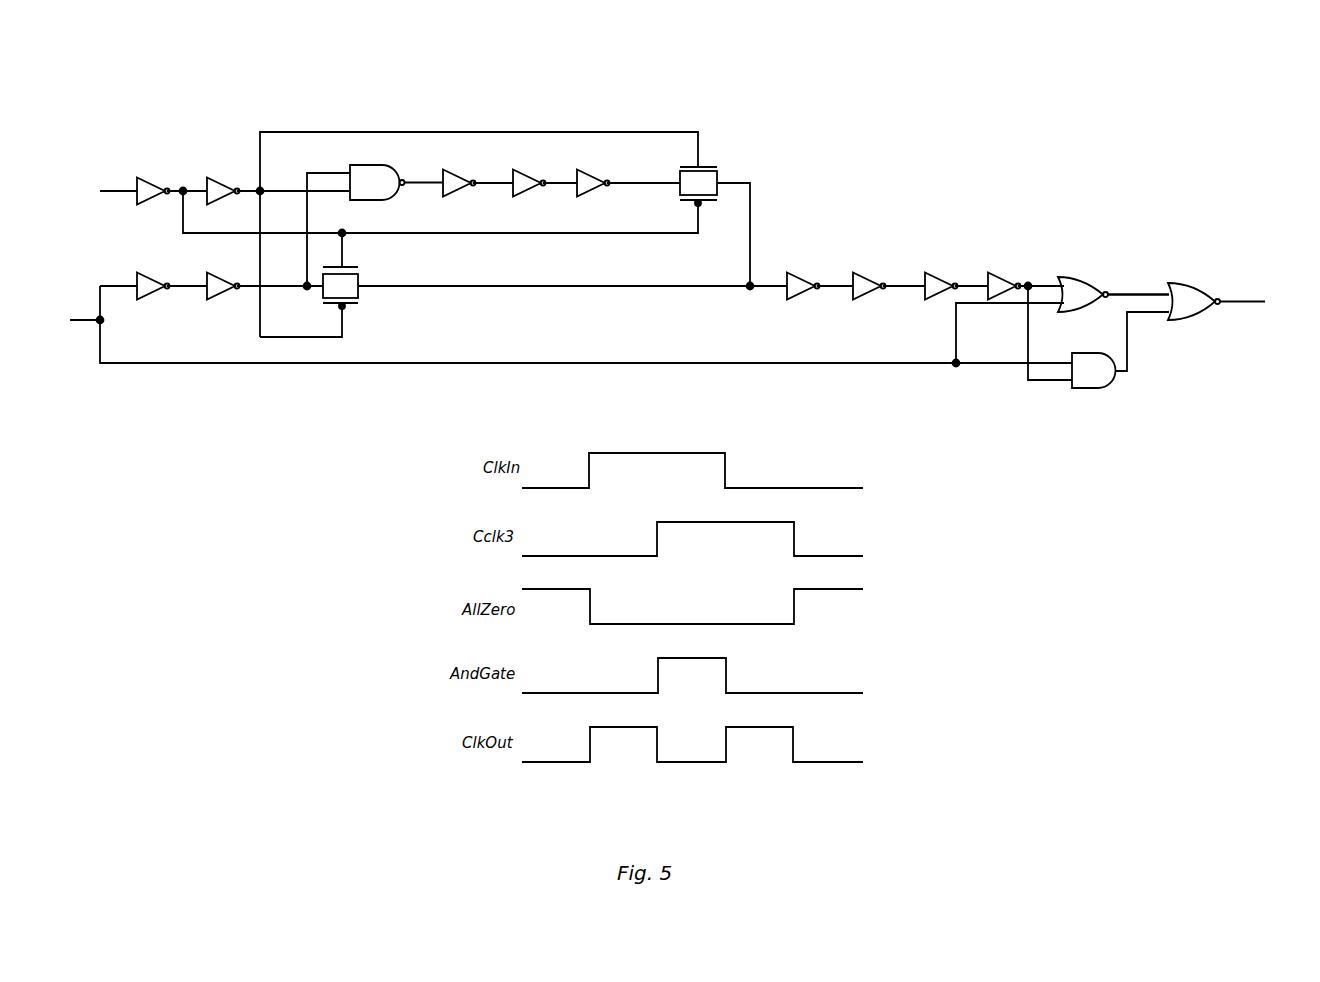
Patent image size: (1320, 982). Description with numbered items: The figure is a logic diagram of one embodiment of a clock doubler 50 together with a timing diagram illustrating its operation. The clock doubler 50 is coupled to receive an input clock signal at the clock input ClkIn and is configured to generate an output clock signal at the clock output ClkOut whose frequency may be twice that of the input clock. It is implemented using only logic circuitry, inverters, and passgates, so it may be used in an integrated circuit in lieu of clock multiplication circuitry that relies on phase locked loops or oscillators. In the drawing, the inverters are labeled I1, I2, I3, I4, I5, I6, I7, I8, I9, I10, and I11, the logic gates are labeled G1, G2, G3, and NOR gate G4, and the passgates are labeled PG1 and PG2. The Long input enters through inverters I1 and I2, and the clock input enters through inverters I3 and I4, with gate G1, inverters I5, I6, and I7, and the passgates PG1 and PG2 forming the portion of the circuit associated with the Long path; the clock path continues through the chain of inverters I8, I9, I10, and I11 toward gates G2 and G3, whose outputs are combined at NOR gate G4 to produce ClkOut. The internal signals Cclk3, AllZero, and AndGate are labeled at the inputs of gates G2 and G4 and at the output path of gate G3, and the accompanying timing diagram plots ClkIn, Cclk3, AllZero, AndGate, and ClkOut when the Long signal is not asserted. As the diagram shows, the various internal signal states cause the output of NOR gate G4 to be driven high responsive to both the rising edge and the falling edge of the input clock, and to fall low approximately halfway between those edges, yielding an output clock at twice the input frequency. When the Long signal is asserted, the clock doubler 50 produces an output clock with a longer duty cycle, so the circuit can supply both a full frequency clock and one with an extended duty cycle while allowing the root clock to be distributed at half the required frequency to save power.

The clock doubler 50 is at (803, 60).
The inverter I1 is at (157, 183).
The inverter I2 is at (225, 183).
The inverter I3 is at (157, 278).
The inverter I4 is at (225, 278).
The inverter I5 is at (463, 176).
The inverter I6 is at (535, 176).
The inverter I7 is at (597, 176).
The inverter I8 is at (806, 279).
The inverter I9 is at (875, 279).
The inverter I10 is at (949, 279).
The inverter I11 is at (1013, 279).
The NAND gate G1 is at (382, 178).
The NOR gate G2 is at (1088, 290).
The AND gate G3 is at (1104, 377).
The NOR gate G4 is at (1201, 298).
The pass gate PG1 is at (359, 289).
The pass gate PG2 is at (716, 178).
The Cclk3 signal node Cclk3 is at (1046, 276).
The AllZero signal node AllZero is at (1138, 290).
The AndGate signal node AndGate is at (1146, 318).